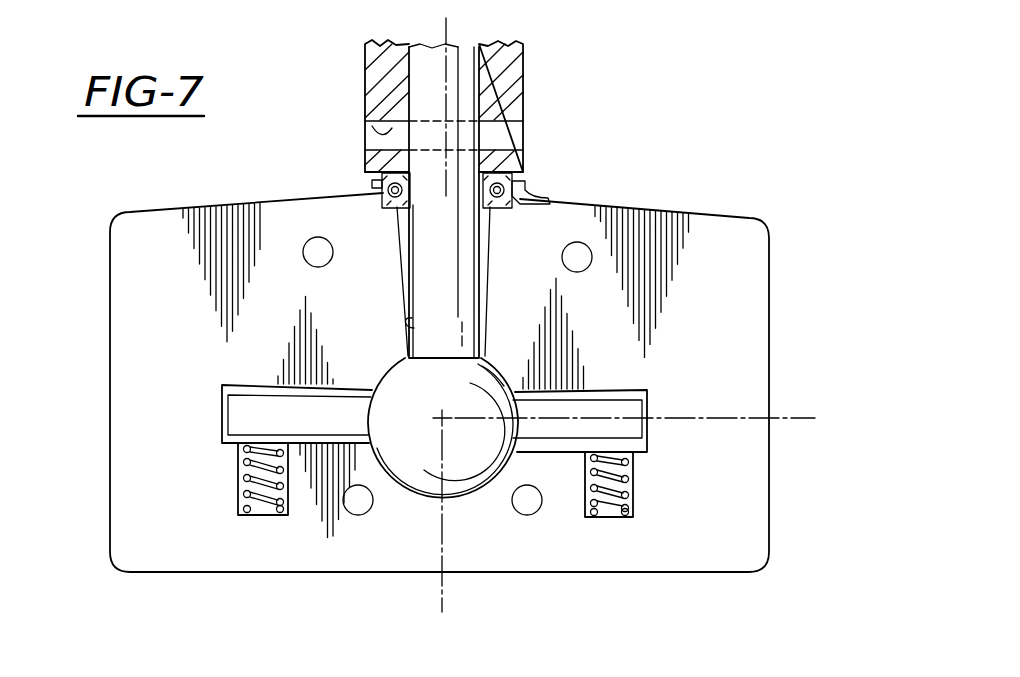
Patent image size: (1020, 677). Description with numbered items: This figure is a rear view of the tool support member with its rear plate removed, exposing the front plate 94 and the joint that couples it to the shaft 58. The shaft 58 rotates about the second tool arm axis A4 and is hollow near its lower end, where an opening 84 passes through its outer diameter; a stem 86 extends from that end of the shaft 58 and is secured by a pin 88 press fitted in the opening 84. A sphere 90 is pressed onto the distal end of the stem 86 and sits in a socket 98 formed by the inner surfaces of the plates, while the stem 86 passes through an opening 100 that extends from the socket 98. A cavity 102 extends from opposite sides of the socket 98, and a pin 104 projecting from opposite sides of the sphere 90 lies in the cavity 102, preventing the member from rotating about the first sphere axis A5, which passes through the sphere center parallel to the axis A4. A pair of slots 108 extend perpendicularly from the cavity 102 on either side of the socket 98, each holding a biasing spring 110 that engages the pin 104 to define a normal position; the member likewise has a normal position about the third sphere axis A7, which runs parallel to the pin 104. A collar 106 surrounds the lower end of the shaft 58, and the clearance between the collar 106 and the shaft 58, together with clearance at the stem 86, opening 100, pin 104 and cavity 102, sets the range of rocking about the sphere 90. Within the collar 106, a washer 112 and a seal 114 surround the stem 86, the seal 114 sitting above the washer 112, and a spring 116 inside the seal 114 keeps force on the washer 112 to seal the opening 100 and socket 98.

The shaft 58 is at (523, 84).
The opening 84 is at (383, 134).
The stem 86 is at (468, 318).
The pin 88 is at (513, 144).
The sphere 90 is at (390, 358).
The front plate 94 is at (110, 270).
The socket 98 is at (517, 380).
The opening 100 is at (478, 232).
The cavity 102 is at (222, 400).
The pin 104 is at (650, 392).
The collar 106 is at (522, 190).
The slots 108 is at (246, 503).
The biasing spring 110 is at (240, 480).
The washer 112 is at (384, 204).
The seal 114 is at (540, 200).
The spring 116 is at (374, 184).
The second tool arm axis A4 is at (467, 104).
The first sphere axis A5 is at (440, 542).
The third sphere axis A7 is at (649, 431).